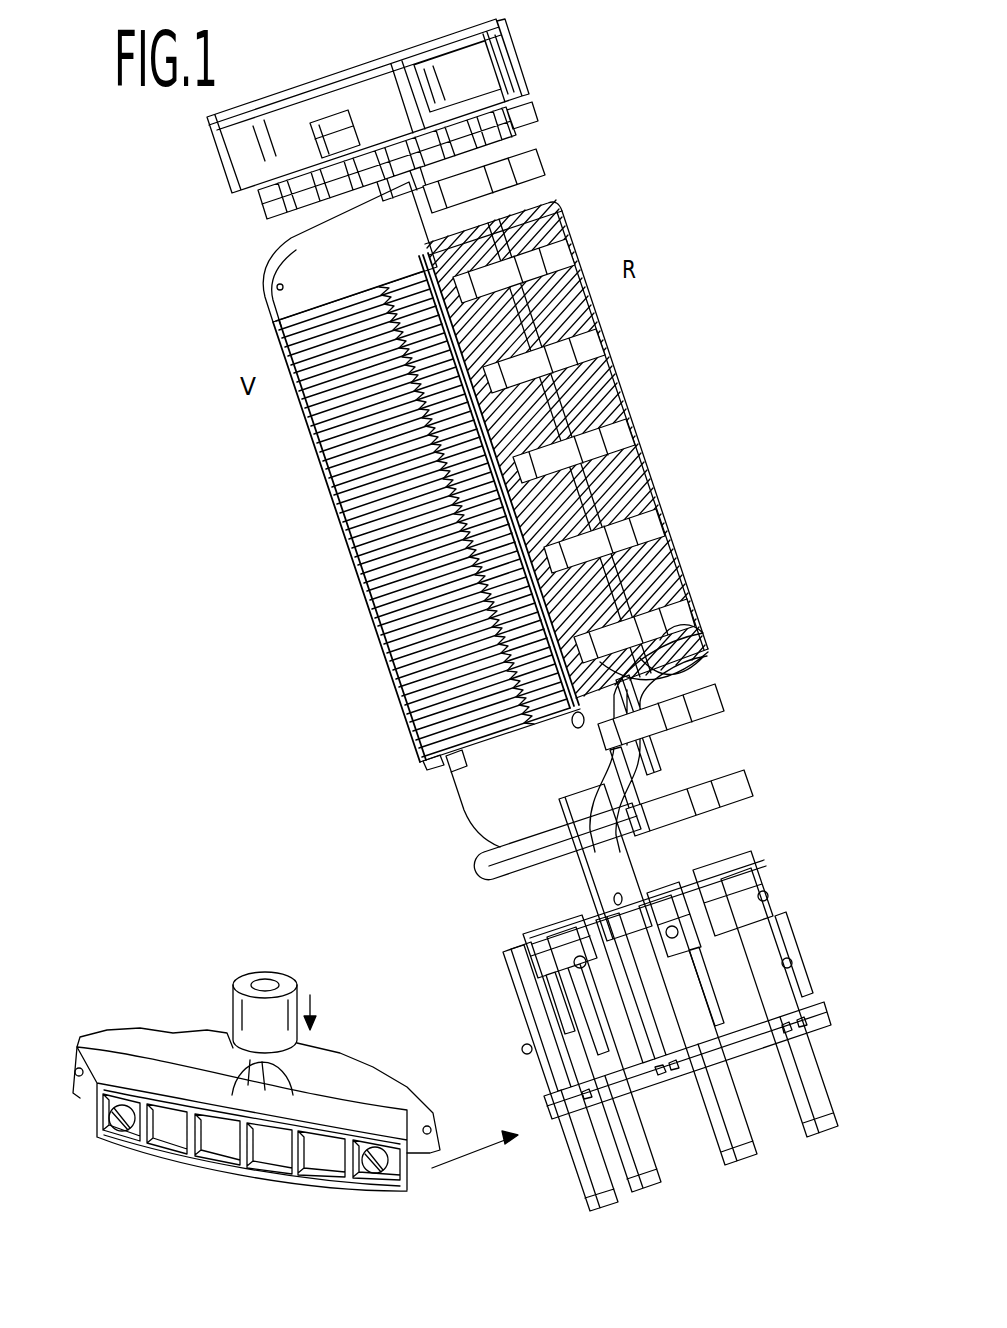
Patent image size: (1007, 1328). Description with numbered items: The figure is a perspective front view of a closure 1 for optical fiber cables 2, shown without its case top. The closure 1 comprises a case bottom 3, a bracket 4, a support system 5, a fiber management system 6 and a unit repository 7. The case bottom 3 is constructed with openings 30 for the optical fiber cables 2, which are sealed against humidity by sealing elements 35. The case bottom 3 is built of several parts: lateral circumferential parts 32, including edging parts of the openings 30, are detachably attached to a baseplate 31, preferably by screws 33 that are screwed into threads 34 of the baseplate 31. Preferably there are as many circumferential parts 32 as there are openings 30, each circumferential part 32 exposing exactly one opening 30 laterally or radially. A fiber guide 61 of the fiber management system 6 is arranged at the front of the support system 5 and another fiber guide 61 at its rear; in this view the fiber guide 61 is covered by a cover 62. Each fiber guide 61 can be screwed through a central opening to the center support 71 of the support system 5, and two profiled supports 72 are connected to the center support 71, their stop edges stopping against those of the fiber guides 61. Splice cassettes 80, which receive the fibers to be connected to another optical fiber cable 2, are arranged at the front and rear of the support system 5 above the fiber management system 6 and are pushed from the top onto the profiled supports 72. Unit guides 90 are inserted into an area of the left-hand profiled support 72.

The closure 1 is at (486, 455).
The optical fiber cables 2 is at (590, 1190).
The case bottom 3 is at (456, 1072).
The bracket 4 is at (722, 886).
The support system 5 is at (670, 1014).
The fiber management system 6 is at (451, 817).
The unit repository 7 is at (530, 52).
The openings 30 is at (230, 1035).
The baseplate 31 is at (133, 1035).
The circumferential parts 32 is at (196, 1165).
The screws 33 is at (120, 1125).
The threads 34 is at (79, 1080).
The sealing elements 35 is at (300, 1035).
The fiber guide 61 is at (690, 738).
The cover 62 is at (493, 850).
The center support 71 is at (600, 875).
The profiled supports 72 is at (652, 788).
The splice cassettes 80 is at (378, 533).
The unit guides 90 is at (630, 435).